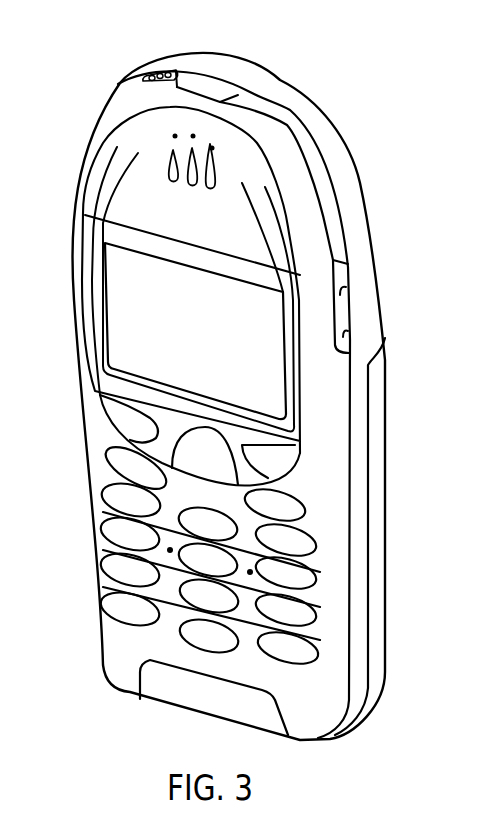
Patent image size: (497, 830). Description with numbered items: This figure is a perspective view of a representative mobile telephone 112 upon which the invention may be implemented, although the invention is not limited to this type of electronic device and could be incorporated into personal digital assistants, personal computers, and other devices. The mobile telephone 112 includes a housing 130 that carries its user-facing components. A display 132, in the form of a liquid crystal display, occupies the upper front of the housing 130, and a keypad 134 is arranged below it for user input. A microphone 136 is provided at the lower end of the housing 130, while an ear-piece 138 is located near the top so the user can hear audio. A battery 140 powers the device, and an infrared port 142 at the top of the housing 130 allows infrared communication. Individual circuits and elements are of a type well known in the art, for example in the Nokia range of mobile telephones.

The mobile telephone 112 is at (336, 61).
The housing 130 is at (357, 191).
The display 132 is at (268, 372).
The keypad 134 is at (291, 658).
The microphone 136 is at (160, 687).
The ear-piece 138 is at (162, 155).
The battery 140 is at (381, 636).
The infrared port 142 is at (212, 82).